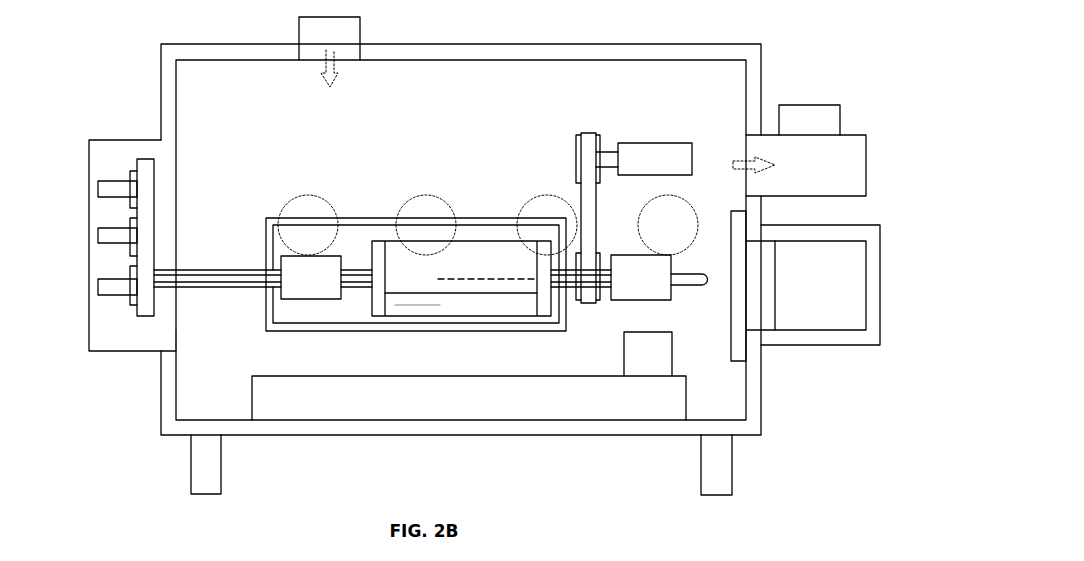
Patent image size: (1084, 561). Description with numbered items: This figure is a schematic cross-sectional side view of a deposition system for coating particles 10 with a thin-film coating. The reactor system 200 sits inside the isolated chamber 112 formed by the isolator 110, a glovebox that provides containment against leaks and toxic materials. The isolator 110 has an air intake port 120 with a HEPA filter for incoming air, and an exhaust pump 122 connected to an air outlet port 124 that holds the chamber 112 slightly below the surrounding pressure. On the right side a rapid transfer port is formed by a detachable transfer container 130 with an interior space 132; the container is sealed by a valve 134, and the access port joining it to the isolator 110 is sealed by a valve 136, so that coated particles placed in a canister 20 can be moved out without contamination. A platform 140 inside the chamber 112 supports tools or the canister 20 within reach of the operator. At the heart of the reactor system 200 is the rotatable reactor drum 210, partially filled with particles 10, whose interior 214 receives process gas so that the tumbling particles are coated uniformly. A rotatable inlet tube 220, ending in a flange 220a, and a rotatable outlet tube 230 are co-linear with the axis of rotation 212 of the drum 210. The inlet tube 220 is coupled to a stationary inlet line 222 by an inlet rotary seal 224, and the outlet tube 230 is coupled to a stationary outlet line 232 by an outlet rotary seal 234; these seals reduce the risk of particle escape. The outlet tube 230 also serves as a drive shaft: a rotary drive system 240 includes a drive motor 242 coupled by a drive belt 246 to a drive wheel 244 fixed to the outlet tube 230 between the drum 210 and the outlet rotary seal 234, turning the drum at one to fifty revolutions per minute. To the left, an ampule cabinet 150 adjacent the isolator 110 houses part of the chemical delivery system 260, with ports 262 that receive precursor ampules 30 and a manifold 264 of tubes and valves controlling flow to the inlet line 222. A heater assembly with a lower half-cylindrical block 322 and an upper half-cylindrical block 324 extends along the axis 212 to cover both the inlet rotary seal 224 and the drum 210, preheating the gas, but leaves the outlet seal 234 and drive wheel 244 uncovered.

The particles 10 is at (417, 300).
The canister 20 is at (648, 354).
The ampules 30 is at (118, 180).
The isolator 110 is at (167, 122).
The isolated chamber 112 is at (461, 240).
The air intake port 120 is at (310, 33).
The exhaust pump 122 is at (840, 165).
The air outlet port 124 is at (810, 120).
The transfer container 130 is at (873, 295).
The interior space 132 is at (820, 285).
The valve 134 is at (767, 315).
The valve 136 is at (739, 345).
The platform 140 is at (588, 378).
The ampule cabinet 150 is at (135, 352).
The reactor system 200 is at (263, 157).
The reactor drum 210 is at (475, 240).
The axis of rotation 212 is at (468, 282).
The interior of the reactor drum 214 is at (487, 265).
The rotatable inlet tube 220 is at (353, 270).
The flange 220a is at (357, 283).
The stationary inlet line 222 is at (222, 268).
The inlet rotary seal 224 is at (310, 297).
The rotatable outlet tube 230 is at (577, 305).
The stationary outlet line 232 is at (705, 288).
The outlet rotary seal 234 is at (631, 287).
The rotary drive system 240 is at (679, 103).
The drive motor 242 is at (653, 152).
The drive wheel 244 is at (598, 255).
The drive belt 246 is at (587, 198).
The chemical delivery system 260 is at (190, 345).
The ports 262 is at (137, 300).
The manifold 264 is at (139, 316).
The lower half-cylindrical block 322 is at (495, 327).
The upper half-cylindrical block 324 is at (379, 220).